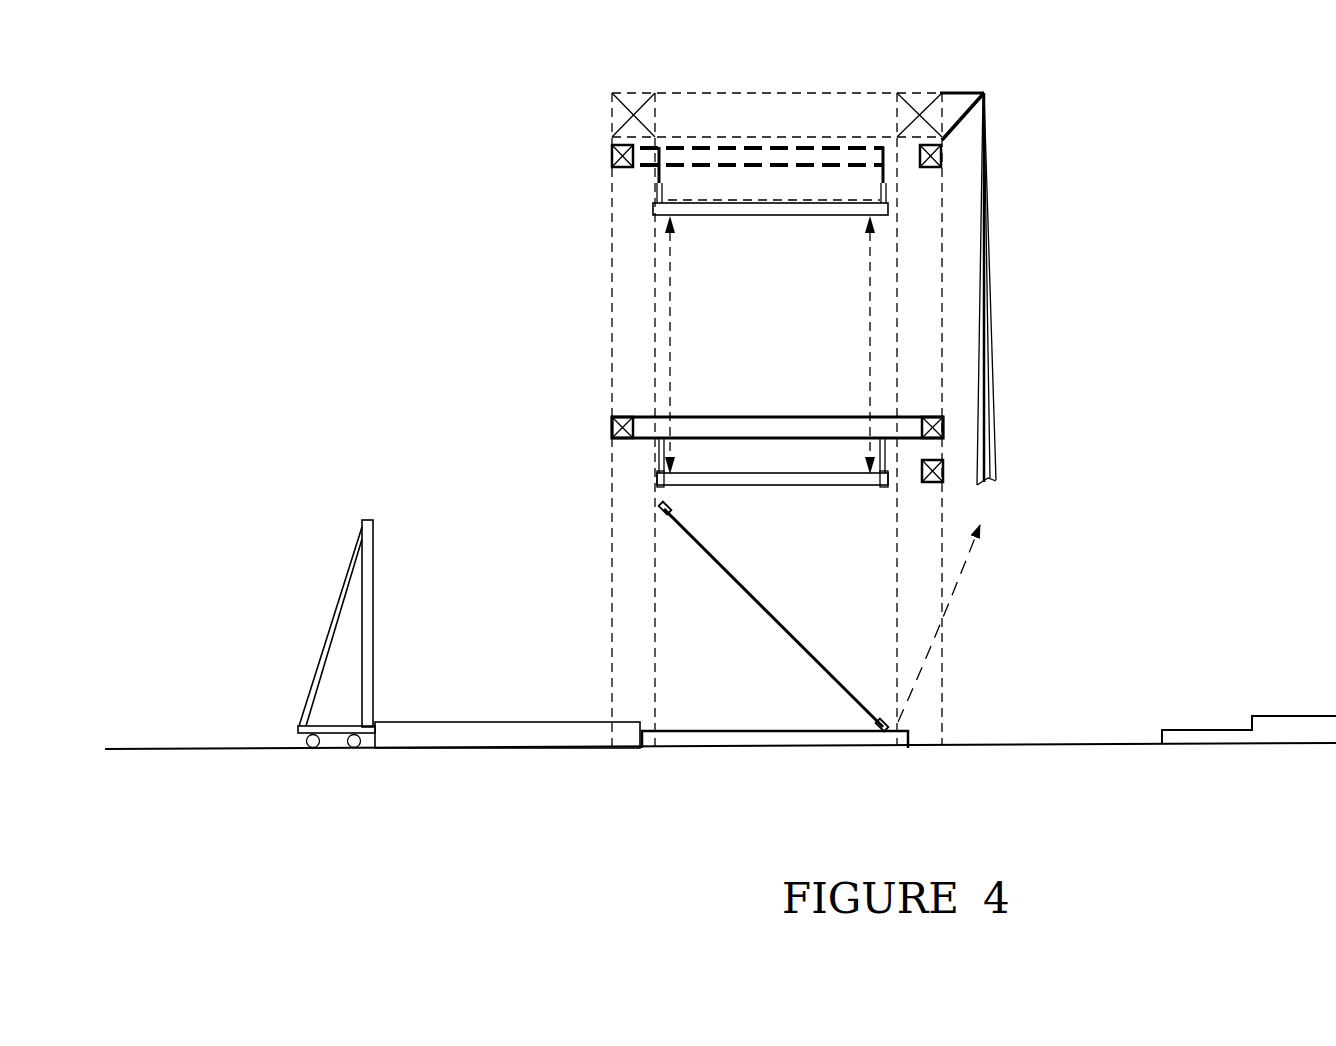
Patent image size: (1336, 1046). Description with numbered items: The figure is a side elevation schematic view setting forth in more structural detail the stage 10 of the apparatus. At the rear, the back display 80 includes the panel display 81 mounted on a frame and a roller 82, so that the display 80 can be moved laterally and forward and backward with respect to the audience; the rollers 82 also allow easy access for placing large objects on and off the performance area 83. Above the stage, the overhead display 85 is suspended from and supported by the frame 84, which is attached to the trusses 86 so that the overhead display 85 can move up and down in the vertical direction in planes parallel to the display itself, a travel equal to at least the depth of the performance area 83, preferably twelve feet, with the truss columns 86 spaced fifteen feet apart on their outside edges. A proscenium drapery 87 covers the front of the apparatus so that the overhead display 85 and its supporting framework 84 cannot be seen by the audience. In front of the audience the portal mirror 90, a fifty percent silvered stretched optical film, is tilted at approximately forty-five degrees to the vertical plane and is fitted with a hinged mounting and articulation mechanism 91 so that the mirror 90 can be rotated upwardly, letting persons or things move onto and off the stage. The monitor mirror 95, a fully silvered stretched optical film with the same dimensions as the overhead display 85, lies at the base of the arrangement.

The stage 10 is at (1249, 655).
The back display 80 is at (340, 576).
The panel display 81 is at (377, 620).
The roller 82 is at (303, 748).
The performance area 83 is at (642, 751).
The frame 84 is at (763, 423).
The overhead display 85 is at (726, 478).
The trusses 86 is at (620, 222).
The proscenium drapery 87 is at (988, 242).
The portal mirror 90 is at (800, 645).
The hinged mounting and articulation mechanism 91 is at (656, 508).
The monitor mirror 95 is at (770, 735).